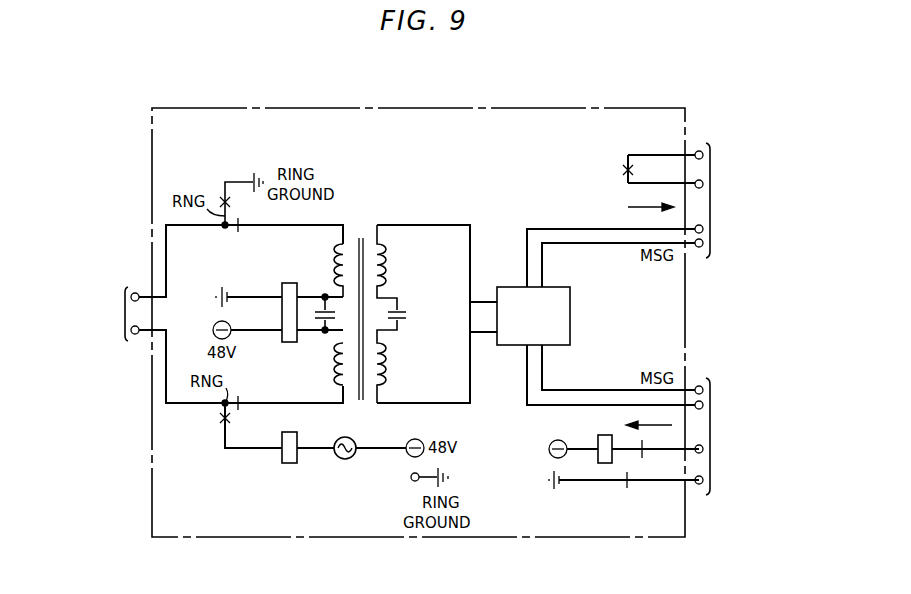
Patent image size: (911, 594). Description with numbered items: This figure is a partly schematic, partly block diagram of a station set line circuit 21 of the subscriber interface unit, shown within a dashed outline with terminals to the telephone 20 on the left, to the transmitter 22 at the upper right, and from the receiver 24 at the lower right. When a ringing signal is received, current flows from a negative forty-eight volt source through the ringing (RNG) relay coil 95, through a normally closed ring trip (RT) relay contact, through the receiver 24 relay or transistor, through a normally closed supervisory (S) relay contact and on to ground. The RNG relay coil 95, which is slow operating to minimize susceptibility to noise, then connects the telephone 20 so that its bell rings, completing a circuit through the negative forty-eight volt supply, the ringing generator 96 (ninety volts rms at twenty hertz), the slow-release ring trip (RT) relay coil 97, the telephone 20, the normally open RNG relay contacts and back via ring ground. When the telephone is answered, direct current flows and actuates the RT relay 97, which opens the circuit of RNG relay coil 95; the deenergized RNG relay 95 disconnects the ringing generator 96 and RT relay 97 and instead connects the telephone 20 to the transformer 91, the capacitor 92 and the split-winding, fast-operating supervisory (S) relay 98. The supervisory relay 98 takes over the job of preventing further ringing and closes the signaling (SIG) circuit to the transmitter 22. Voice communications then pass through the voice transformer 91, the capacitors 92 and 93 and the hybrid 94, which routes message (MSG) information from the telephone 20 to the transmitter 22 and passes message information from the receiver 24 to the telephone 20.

The telephone 20 is at (80, 316).
The station set line circuit 21 is at (520, 108).
The transmitter 22 is at (714, 197).
The receiver 24 is at (670, 442).
The voice transformer 91 is at (364, 236).
The capacitor 92 is at (308, 306).
The capacitor 93 is at (408, 314).
The hybrid 94 is at (572, 323).
The ringing (RNG) relay coil 95 is at (598, 459).
The ringing generator 96 is at (341, 437).
The ring trip (RT) relay coil 97 is at (285, 453).
The supervisory (S) relay 98 is at (284, 282).